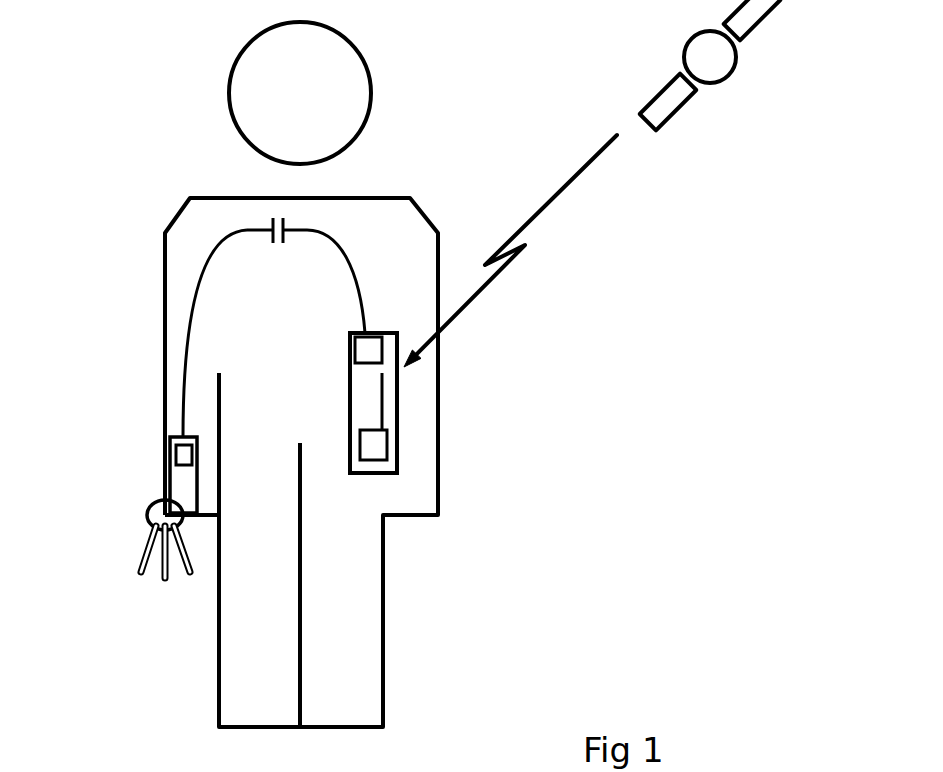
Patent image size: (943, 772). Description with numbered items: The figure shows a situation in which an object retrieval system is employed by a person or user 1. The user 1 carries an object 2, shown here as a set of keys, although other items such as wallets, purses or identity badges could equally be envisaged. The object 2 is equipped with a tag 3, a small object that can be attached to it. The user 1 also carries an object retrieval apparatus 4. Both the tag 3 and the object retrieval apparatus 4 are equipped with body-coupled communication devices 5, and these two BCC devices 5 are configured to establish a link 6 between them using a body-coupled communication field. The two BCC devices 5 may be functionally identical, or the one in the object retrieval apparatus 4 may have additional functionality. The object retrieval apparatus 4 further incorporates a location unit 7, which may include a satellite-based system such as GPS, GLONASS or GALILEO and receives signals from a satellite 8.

The person or user 1 is at (418, 423).
The object 2 is at (158, 553).
The tag 3 is at (183, 490).
The object retrieval apparatus 4 is at (383, 386).
The body-coupled communication devices 5 is at (380, 338).
The link 6 is at (353, 261).
The location unit 7 is at (377, 440).
The satellite 8 is at (695, 87).